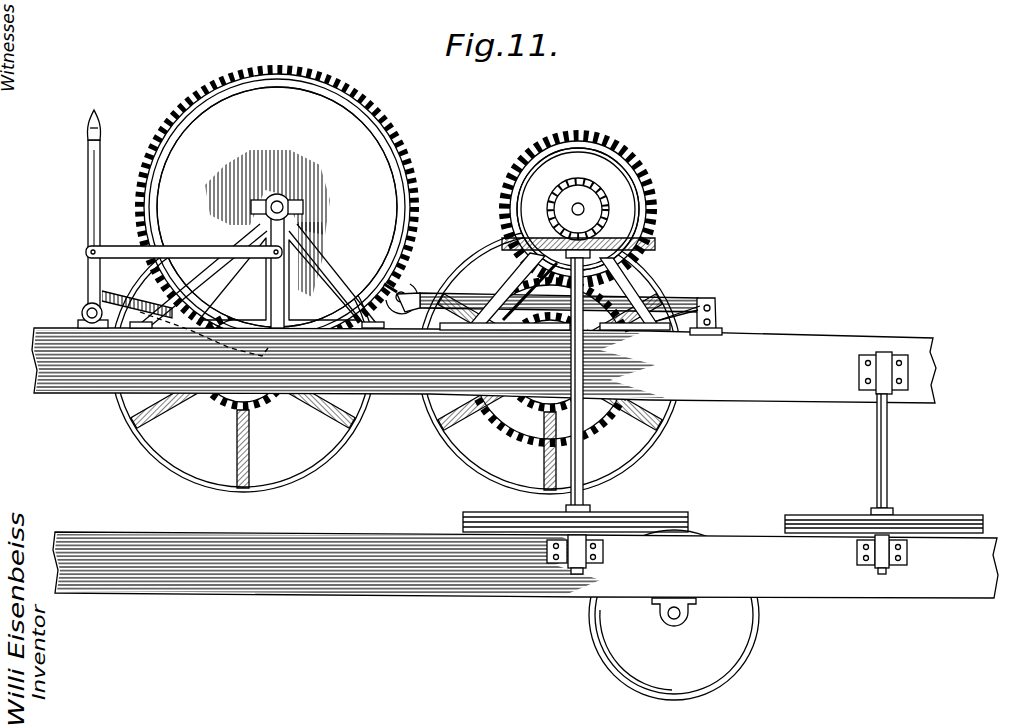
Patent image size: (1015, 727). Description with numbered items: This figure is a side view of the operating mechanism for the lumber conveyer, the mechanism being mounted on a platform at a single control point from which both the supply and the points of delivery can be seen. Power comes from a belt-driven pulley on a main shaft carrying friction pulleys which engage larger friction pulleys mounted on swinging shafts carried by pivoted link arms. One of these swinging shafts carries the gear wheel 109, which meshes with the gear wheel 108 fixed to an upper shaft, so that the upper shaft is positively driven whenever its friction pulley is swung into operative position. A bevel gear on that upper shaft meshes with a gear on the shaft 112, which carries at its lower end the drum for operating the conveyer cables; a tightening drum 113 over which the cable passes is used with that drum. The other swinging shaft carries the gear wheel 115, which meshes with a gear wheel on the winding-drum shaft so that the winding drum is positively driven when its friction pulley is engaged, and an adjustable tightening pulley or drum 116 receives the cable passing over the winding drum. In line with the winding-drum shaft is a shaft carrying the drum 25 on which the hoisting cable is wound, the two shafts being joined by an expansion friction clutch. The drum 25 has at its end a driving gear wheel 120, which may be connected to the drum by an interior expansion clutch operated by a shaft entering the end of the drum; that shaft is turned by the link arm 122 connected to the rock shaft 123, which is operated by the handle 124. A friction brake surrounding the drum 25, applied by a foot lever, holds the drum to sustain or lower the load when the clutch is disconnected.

The drum 25 is at (396, 188).
The gear wheel 108 is at (652, 200).
The gear wheel 109 is at (550, 362).
The shaft 112 is at (590, 491).
The tightening drum 113 is at (822, 507).
The gear wheel 115 is at (217, 410).
The adjustable tightening pulley or drum 116 is at (775, 618).
The driving gear wheel 120 is at (378, 99).
The link arm 122 is at (150, 240).
The rock shaft 123 is at (86, 313).
The handle 124 is at (88, 211).